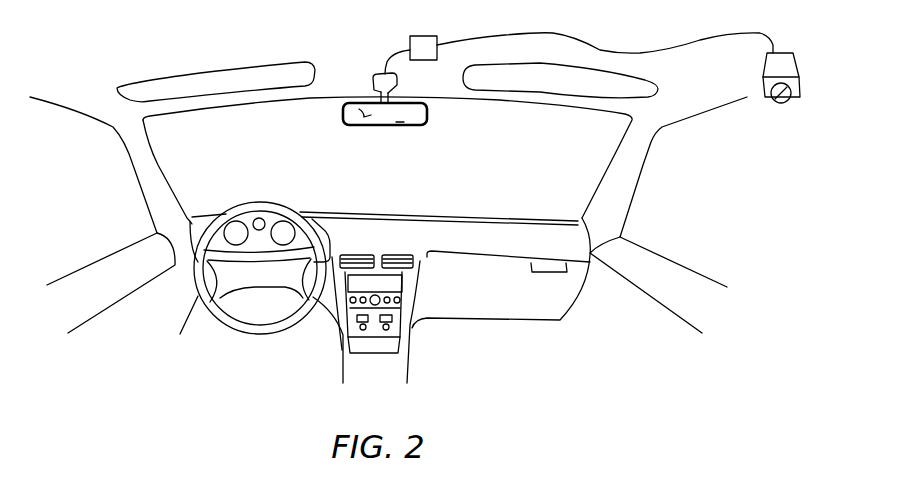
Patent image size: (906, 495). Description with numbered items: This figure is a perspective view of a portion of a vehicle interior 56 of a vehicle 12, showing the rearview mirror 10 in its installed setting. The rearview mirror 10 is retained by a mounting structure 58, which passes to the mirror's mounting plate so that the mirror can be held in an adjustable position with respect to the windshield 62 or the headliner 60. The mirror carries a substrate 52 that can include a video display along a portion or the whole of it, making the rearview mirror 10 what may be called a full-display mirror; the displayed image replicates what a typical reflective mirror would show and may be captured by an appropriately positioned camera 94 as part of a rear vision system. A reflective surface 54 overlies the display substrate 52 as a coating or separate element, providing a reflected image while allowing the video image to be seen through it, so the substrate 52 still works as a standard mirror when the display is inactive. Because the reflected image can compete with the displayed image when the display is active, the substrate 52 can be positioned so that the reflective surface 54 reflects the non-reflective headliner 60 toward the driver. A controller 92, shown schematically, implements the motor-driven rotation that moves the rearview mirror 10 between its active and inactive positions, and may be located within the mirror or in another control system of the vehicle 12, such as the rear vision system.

The rearview mirror 10 is at (440, 116).
The vehicle 12 is at (120, 44).
The substrate 52 is at (403, 128).
The reflective surface 54 is at (362, 117).
The vehicle interior 56 is at (612, 148).
The mounting structure 58 is at (378, 88).
The headliner 60 is at (353, 29).
The windshield 62 is at (543, 169).
The controller 92 is at (429, 36).
The camera 94 is at (782, 52).